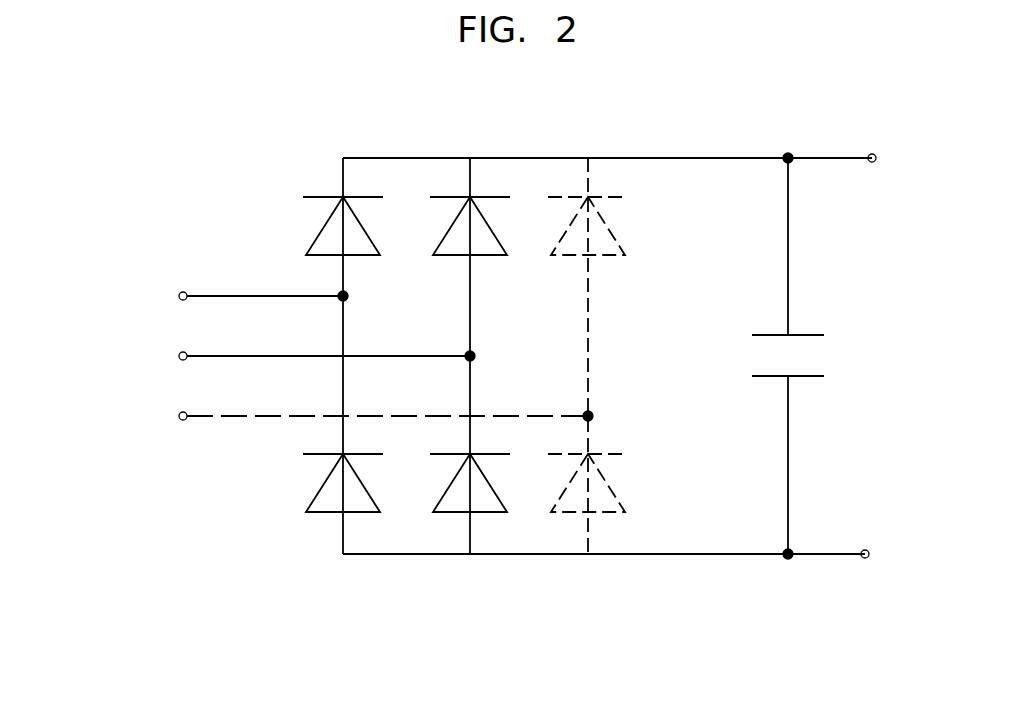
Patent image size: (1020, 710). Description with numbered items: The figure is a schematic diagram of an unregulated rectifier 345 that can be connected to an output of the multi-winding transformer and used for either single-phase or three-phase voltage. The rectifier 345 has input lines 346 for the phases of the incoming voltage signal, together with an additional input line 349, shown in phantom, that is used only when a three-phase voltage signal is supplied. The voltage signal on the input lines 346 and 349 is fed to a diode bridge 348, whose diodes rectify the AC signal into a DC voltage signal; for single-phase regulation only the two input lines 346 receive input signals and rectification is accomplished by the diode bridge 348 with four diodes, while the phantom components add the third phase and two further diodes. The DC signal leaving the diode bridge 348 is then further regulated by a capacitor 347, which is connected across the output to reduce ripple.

The unregulated rectifier 345 is at (893, 355).
The input lines 346 is at (142, 445).
The capacitor 347 is at (756, 400).
The diode bridge 348 is at (632, 588).
The input line 349 is at (152, 468).